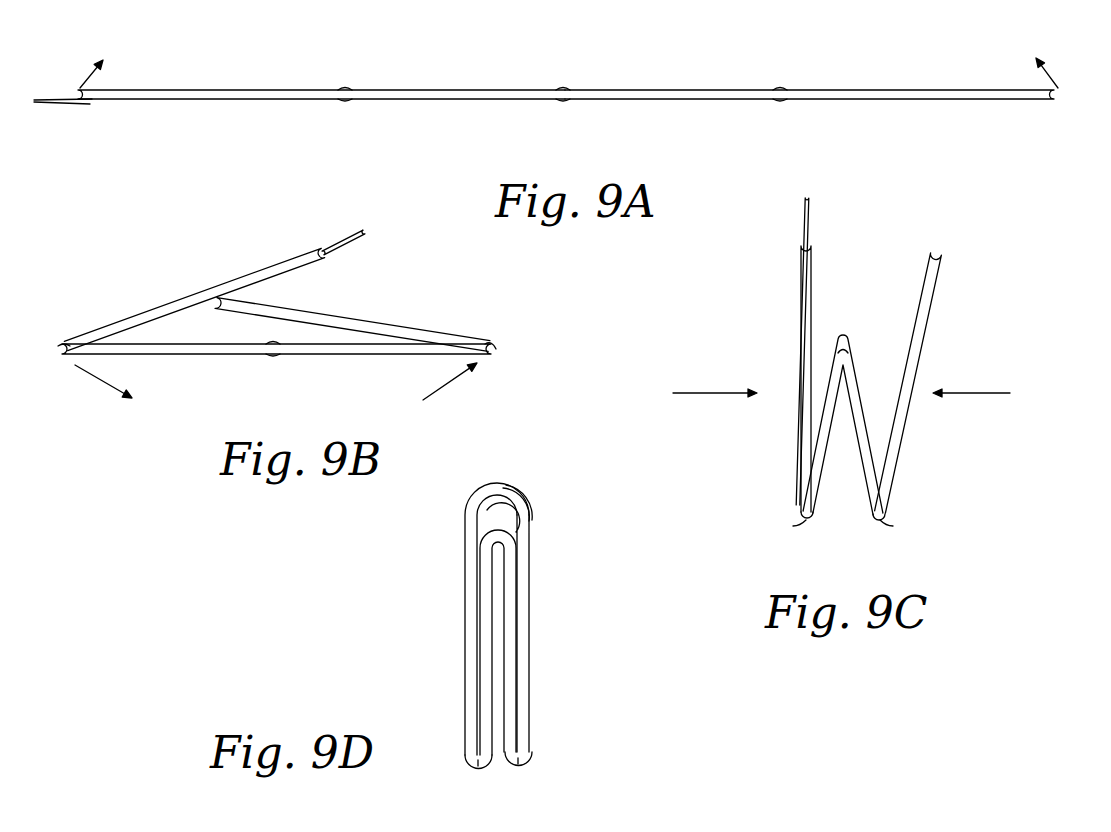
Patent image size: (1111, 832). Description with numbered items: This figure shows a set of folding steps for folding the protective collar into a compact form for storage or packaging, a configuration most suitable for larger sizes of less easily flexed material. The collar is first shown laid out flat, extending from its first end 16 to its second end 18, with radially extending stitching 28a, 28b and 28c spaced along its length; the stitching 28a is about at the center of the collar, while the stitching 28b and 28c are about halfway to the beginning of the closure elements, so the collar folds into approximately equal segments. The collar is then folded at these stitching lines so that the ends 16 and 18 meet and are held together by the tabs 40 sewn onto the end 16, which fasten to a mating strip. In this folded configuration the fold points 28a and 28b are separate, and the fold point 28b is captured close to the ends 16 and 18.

In FIG. 9A, the first end 16 is at (78, 88).
In FIG. 9B, the first end 16 is at (312, 250).
In FIG. 9C, the first end 16 is at (818, 240).
In FIG. 9D, the first end 16 is at (500, 484).
In FIG. 9A, the second end 18 is at (1060, 87).
In FIG. 9B, the second end 18 is at (216, 300).
In FIG. 9C, the second end 18 is at (938, 252).
In FIG. 9D, the second end 18 is at (518, 530).
In FIG. 9B, the tabs 40 is at (366, 231).
In FIG. 9C, the tabs 40 is at (800, 208).
In FIG. 9D, the tabs 40 is at (533, 508).
In FIG. 9A, the radially extending stitching 28a is at (345, 101).
In FIG. 9B, the radially extending stitching 28a is at (62, 356).
In FIG. 9C, the radially extending stitching 28a is at (806, 520).
In FIG. 9D, the radially extending stitching 28a is at (478, 764).
In FIG. 9A, the radially extending stitching 28b is at (566, 101).
In FIG. 9B, the radially extending stitching 28b is at (273, 355).
In FIG. 9C, the radially extending stitching 28b is at (846, 334).
In FIG. 9D, the radially extending stitching 28b is at (497, 536).
In FIG. 9A, the radially extending stitching 28c is at (782, 101).
In FIG. 9B, the radially extending stitching 28c is at (496, 356).
In FIG. 9C, the radially extending stitching 28c is at (880, 521).
In FIG. 9D, the radially extending stitching 28c is at (520, 764).